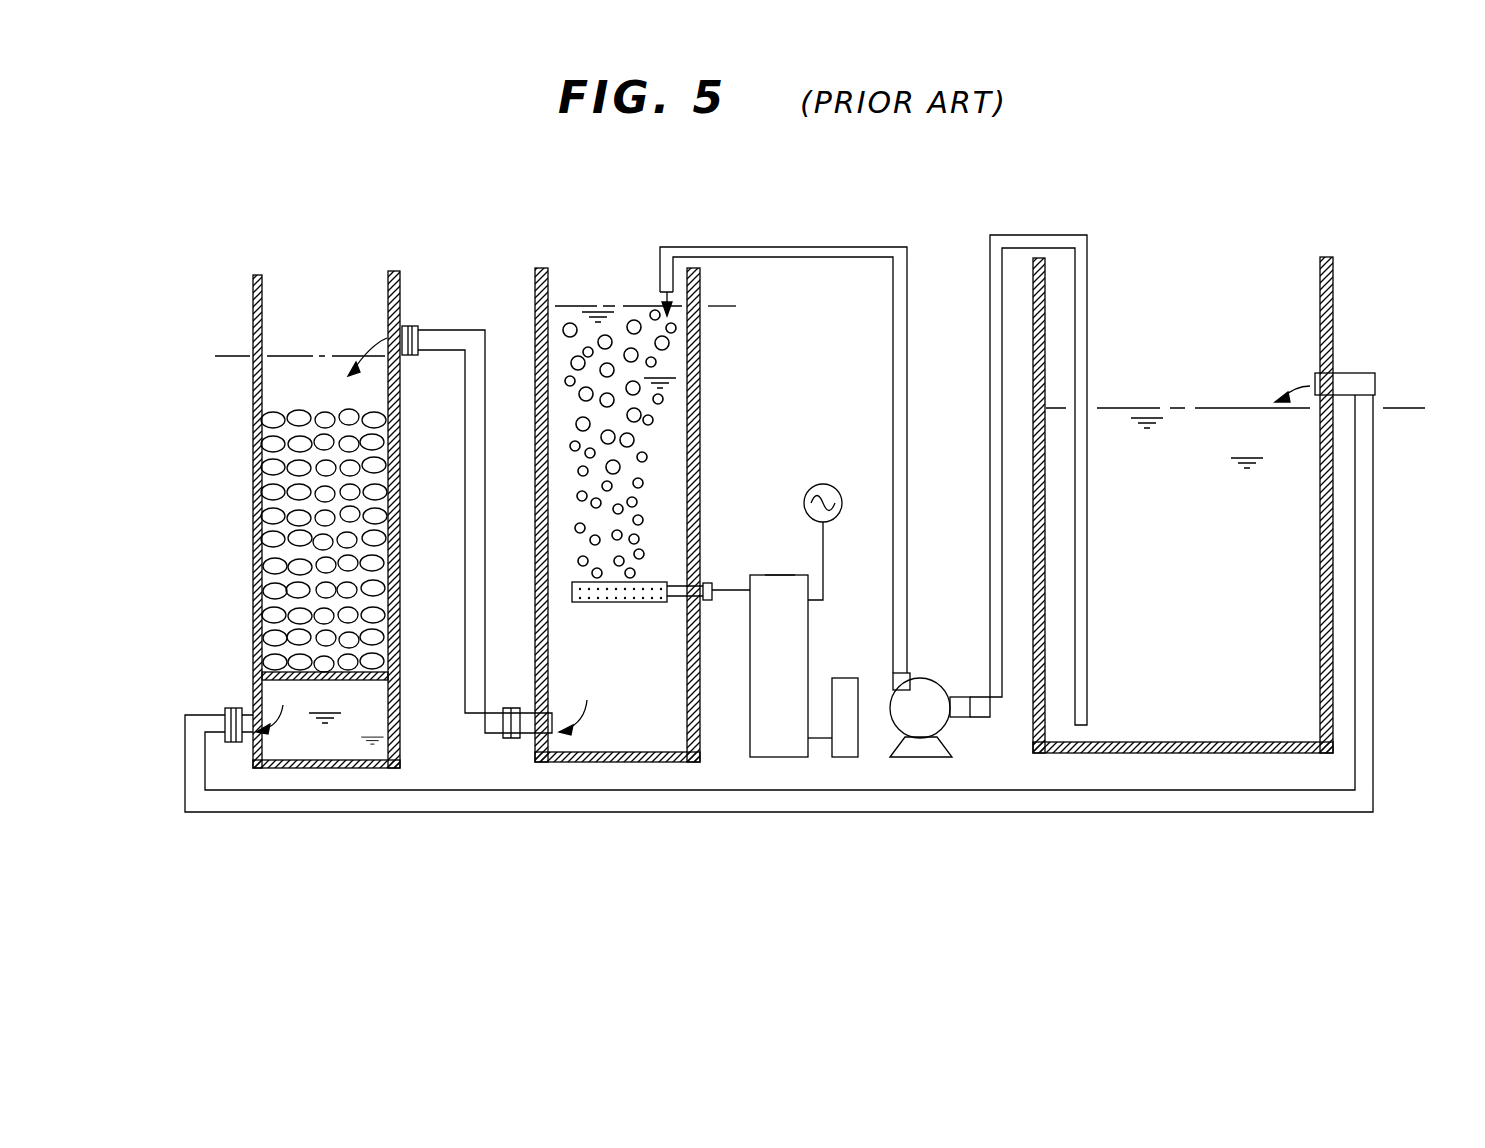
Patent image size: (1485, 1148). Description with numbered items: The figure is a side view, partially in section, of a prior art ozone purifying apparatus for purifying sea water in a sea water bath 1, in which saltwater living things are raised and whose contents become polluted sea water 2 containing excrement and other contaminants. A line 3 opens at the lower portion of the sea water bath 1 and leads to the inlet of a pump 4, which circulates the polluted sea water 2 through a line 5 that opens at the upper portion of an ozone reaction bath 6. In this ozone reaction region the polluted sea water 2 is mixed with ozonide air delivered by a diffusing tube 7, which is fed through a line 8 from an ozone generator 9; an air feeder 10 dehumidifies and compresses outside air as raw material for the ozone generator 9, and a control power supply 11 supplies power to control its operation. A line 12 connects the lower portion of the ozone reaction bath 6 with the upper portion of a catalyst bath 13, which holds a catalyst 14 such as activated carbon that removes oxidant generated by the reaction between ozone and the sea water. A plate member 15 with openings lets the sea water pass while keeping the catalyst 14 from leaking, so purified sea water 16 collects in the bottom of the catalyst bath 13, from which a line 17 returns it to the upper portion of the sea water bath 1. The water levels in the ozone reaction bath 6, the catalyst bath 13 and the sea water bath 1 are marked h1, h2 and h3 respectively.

The sea water bath 1 is at (1333, 326).
The polluted sea water 2 is at (1135, 408).
The line 3 is at (1035, 235).
The pump 4 is at (930, 680).
The line 5 is at (800, 247).
The ozone reaction bath 6 is at (700, 395).
The diffusing tube 7 is at (645, 580).
The line 8 is at (750, 577).
The ozone generator 9 is at (782, 575).
The air feeder 10 is at (845, 678).
The control power supply 11 is at (832, 484).
The line 12 is at (465, 548).
The catalyst bath 13 is at (402, 314).
The catalyst 14 is at (283, 490).
The plate member 15 is at (277, 695).
The purified sea water 16 is at (318, 737).
The line 17 is at (660, 815).
The water level h1 is at (743, 307).
The water level h2 is at (281, 356).
The water level h3 is at (1423, 409).